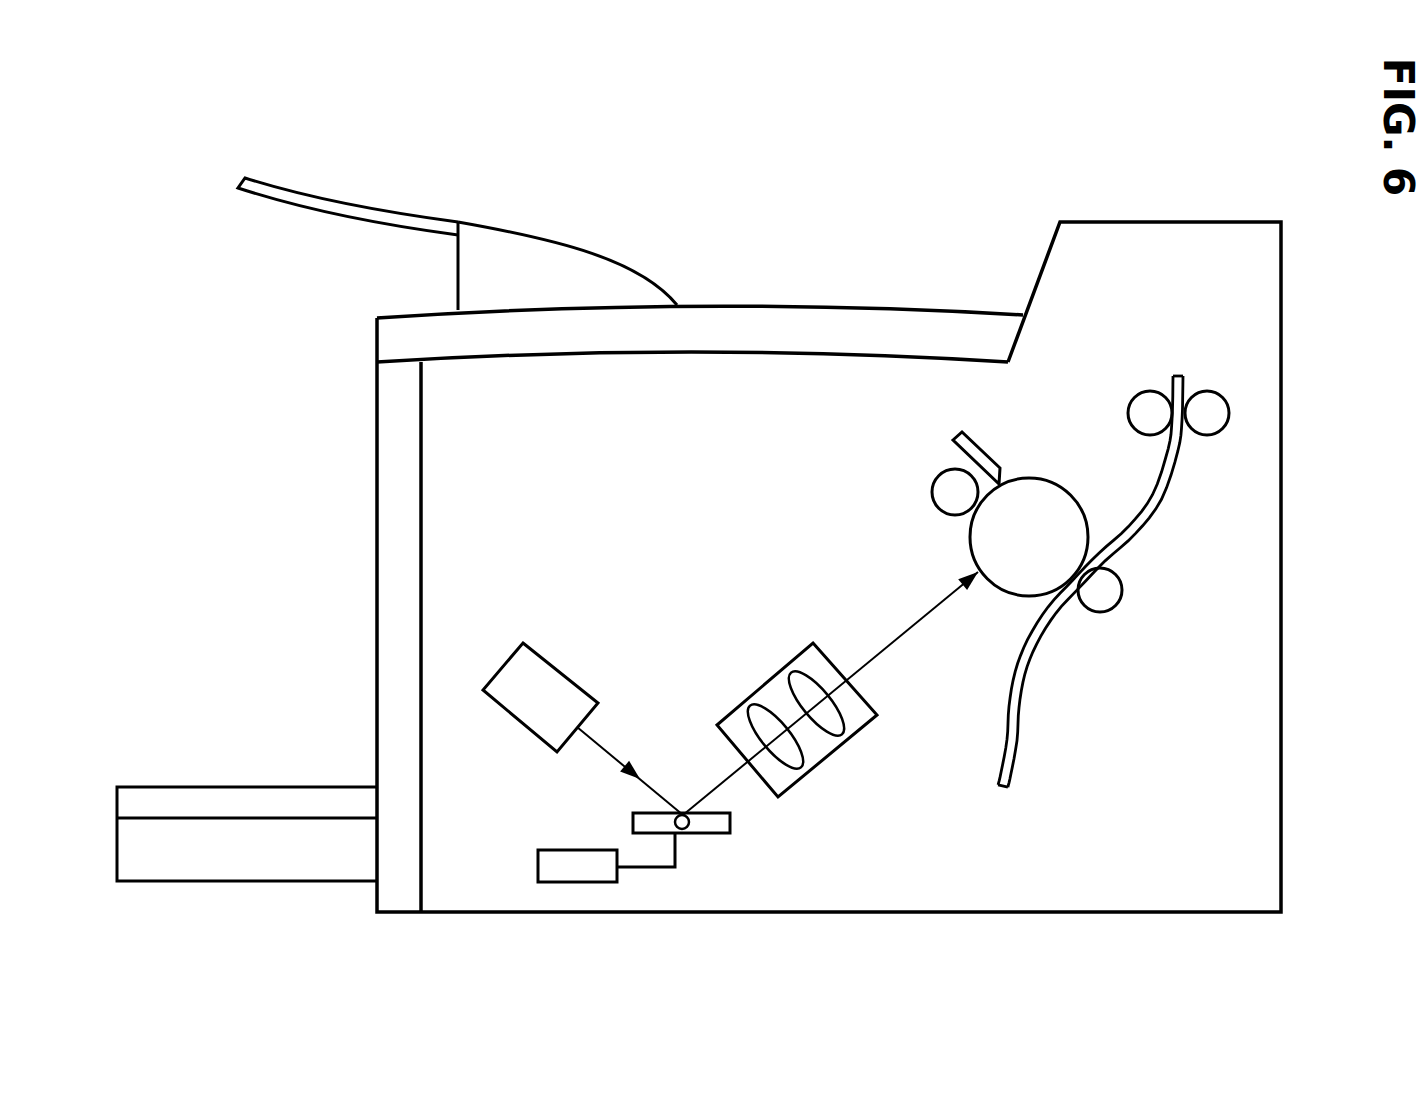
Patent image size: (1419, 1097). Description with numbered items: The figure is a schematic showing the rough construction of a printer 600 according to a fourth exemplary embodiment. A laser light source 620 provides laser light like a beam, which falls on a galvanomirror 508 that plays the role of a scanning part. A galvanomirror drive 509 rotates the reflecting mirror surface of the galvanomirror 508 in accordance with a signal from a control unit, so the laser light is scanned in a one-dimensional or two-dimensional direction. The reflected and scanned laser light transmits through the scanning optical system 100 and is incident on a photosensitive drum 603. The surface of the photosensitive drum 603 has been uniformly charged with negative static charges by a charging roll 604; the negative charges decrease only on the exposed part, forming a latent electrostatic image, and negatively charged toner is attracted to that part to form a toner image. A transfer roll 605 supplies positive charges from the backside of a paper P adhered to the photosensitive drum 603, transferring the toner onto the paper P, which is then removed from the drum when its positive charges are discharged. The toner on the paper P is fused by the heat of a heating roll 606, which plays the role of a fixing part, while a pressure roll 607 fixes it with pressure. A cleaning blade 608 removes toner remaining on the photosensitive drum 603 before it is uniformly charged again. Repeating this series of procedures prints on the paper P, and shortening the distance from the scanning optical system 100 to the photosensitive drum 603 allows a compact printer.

The printer 600 is at (1162, 186).
The photosensitive drum 603 is at (1019, 478).
The charging roll 604 is at (935, 470).
The cleaning blade 608 is at (977, 432).
The pressure roll 607 is at (1152, 390).
The heating roll 606 is at (1230, 413).
The transfer roll 605 is at (1124, 590).
The paper P is at (1018, 747).
The laser light source 620 is at (500, 710).
The scanning optical system 100 is at (832, 752).
The galvanomirror 508 is at (712, 833).
The galvanomirror drive 509 is at (578, 882).